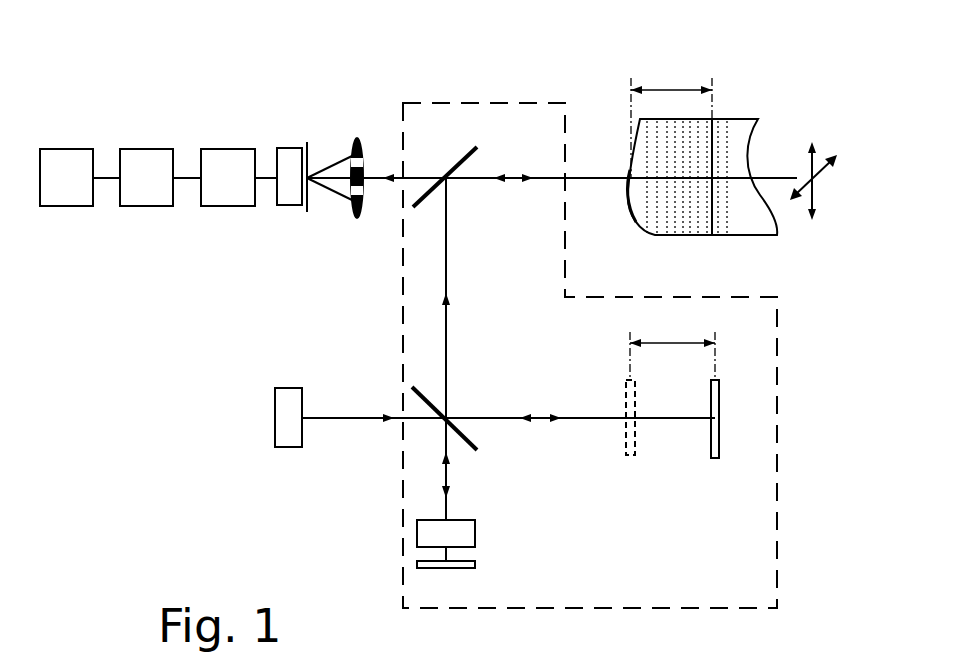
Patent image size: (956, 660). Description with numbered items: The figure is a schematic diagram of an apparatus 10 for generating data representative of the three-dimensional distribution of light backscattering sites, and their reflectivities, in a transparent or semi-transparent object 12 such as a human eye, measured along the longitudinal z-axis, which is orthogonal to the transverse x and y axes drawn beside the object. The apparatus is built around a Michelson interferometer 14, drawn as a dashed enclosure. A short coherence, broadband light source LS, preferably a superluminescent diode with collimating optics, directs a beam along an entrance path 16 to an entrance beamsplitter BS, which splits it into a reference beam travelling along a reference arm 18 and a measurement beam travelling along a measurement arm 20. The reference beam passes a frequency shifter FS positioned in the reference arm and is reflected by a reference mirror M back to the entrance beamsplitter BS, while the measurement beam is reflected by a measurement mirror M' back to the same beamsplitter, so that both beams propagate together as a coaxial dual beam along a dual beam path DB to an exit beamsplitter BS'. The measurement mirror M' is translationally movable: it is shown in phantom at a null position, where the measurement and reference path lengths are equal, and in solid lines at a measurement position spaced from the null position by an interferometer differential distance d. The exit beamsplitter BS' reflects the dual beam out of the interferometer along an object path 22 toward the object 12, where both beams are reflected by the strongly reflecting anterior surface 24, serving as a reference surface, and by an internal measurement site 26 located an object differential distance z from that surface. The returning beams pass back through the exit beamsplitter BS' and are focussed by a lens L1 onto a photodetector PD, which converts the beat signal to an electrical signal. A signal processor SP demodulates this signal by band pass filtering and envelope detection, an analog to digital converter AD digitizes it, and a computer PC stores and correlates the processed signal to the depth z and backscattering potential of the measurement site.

The apparatus 10 is at (356, 45).
The object 12 is at (745, 130).
The Michelson interferometer 14 is at (518, 103).
The entrance path 16 is at (367, 418).
The reference arm 18 is at (451, 472).
The measurement arm 20 is at (585, 420).
The object path 22 is at (598, 177).
The anterior surface 24 is at (636, 215).
The measurement site 26 is at (728, 213).
The computer PC is at (66, 177).
The analog to digital converter AD is at (146, 177).
The signal processor SP is at (228, 177).
The photodetector PD is at (289, 148).
The lens L1 is at (357, 138).
The exit beamsplitter BS' is at (442, 206).
The entrance beamsplitter BS is at (442, 393).
The dual beam path DB is at (448, 326).
The light source LS is at (275, 410).
The frequency shifter FS is at (476, 532).
The reference mirror M is at (471, 580).
The measurement mirror M' is at (696, 407).
The interferometer differential distance d is at (683, 343).
The object differential distance z is at (685, 88).
The x axis x is at (821, 168).
The y axis y is at (816, 193).